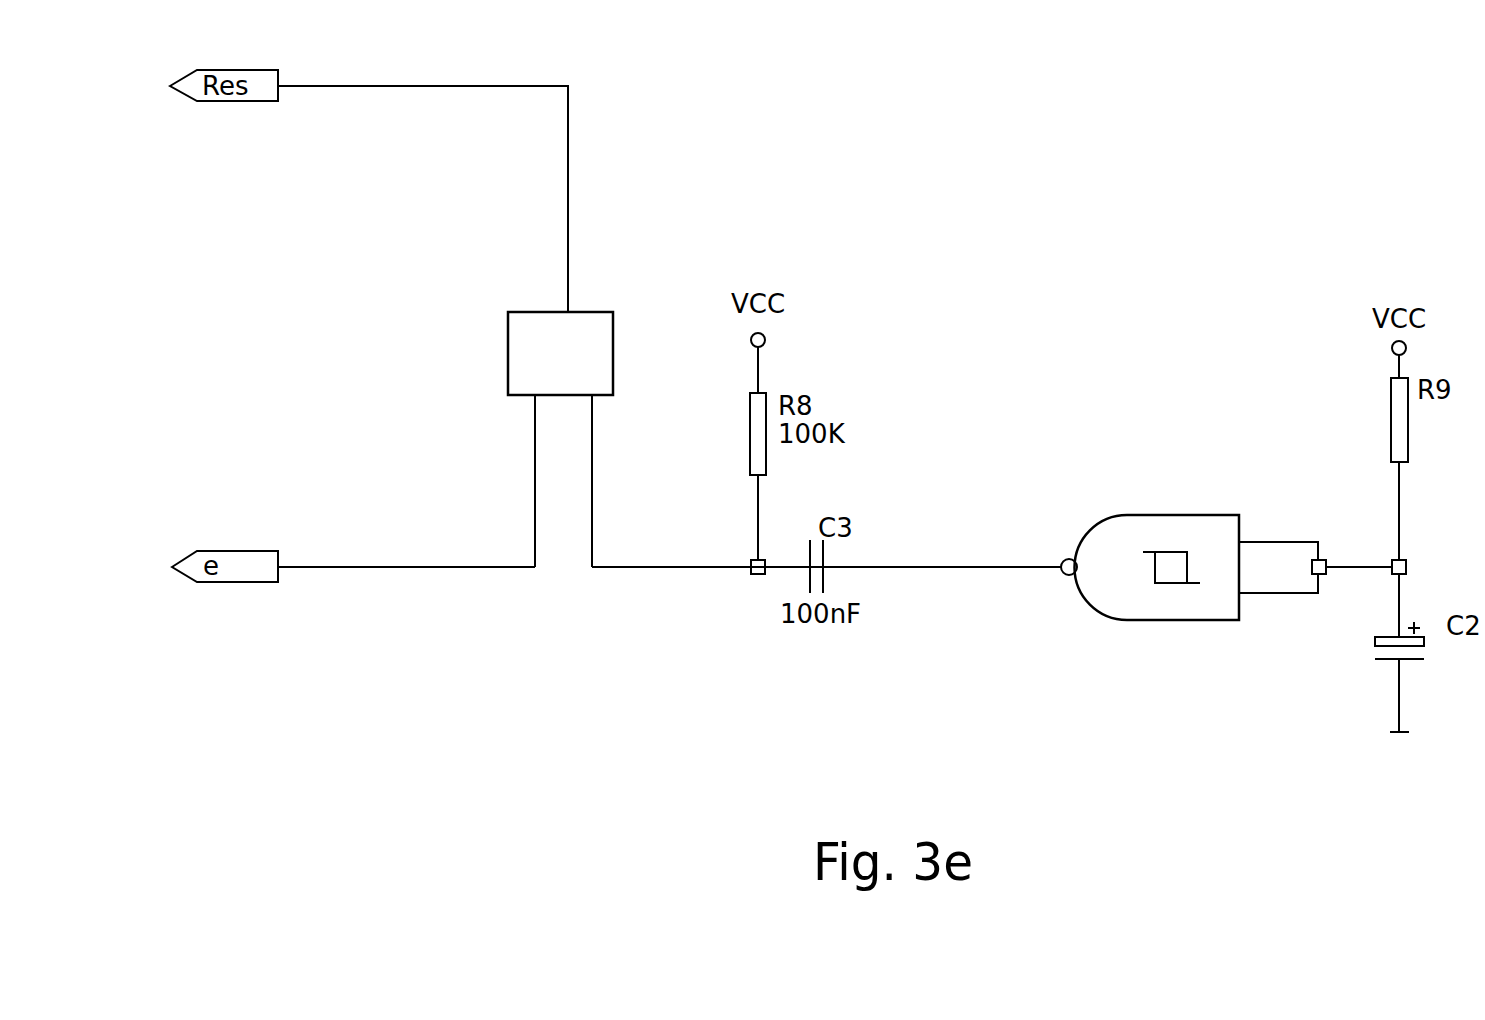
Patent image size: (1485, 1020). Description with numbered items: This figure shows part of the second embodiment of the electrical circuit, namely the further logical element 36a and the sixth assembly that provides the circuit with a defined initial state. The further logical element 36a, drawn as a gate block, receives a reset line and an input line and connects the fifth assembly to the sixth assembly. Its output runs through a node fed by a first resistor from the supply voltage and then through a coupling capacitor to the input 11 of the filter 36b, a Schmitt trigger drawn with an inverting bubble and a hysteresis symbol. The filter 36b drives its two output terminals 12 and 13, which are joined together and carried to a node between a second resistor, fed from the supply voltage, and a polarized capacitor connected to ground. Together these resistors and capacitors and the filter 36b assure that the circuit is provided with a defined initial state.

The further logical element 36a is at (583, 318).
The filter (Schmitt trigger) 36b is at (1118, 537).
The inverter input 11 is at (1038, 558).
The inverter output terminal 12 is at (1278, 535).
The inverter output terminal 13 is at (1278, 581).